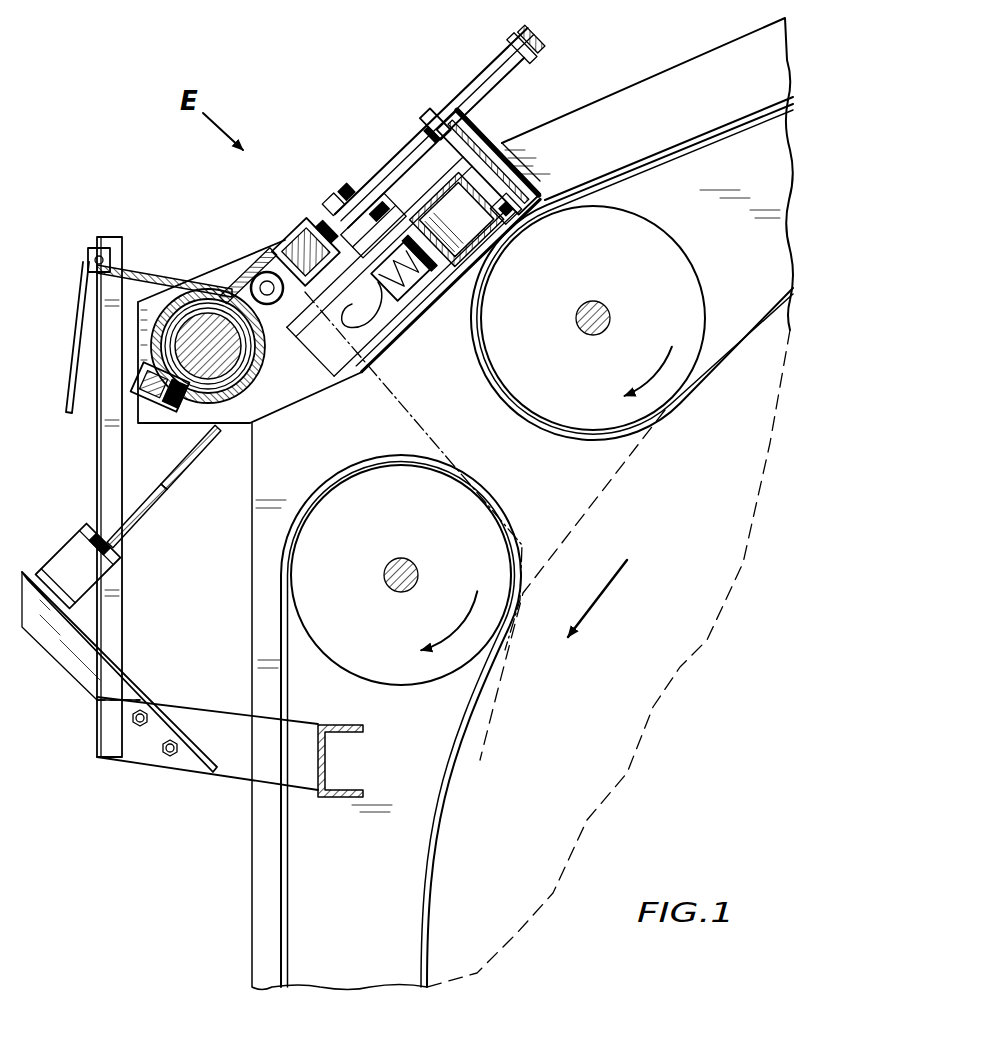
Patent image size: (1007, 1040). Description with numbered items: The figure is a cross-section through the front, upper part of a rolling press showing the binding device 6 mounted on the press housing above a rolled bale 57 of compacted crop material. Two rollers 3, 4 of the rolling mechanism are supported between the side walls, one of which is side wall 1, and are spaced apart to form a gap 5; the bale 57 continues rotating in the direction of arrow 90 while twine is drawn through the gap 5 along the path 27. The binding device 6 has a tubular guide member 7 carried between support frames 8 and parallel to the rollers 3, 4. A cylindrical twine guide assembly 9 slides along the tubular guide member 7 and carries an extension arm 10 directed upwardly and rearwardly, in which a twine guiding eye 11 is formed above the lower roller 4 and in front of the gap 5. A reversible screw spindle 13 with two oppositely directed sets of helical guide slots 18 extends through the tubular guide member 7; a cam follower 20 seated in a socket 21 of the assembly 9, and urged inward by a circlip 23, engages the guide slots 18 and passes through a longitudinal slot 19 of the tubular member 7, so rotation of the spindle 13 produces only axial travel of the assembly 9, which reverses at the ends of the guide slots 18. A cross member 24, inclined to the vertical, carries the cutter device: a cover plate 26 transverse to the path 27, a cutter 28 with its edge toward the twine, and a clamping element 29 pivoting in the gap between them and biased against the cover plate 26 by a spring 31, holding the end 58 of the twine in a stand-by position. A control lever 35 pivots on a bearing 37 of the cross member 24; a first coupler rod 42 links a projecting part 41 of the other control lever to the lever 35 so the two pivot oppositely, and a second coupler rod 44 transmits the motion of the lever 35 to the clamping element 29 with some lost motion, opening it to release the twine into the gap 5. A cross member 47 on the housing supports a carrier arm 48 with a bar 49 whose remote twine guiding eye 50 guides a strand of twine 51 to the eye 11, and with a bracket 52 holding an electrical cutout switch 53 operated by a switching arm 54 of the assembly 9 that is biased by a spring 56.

The side wall 1 is at (660, 87).
The roller 3 is at (665, 250).
The roller 4 is at (390, 677).
The gap 5 is at (547, 500).
The binding device 6 is at (218, 248).
The tubular guide member 7 is at (160, 300).
The support frames 8 is at (302, 390).
The twine guide assembly 9 is at (183, 292).
The extension arm 10 is at (249, 272).
The twine guiding eye 11 is at (266, 262).
The reversible screw spindle 13 is at (260, 420).
The guide slots 18 is at (270, 357).
The longitudinally extending slot 19 is at (180, 352).
The cam follower 20 is at (130, 400).
The socket 21 is at (135, 375).
The circlip 23 is at (137, 373).
The cross member 24 is at (487, 237).
The cover plate 26 is at (413, 193).
The path of twine 27 is at (433, 430).
The cutter 28 is at (377, 297).
The clamping element 29 is at (337, 203).
The spring 31 is at (427, 295).
The control lever 35 is at (413, 130).
The bearing 37 is at (500, 147).
The projecting part 41 is at (475, 70).
The first coupler rod 42 is at (493, 80).
The second coupler rod 44 is at (340, 187).
The cross member 47 is at (338, 797).
The carrier arm 48 is at (233, 763).
The bar 49 is at (105, 480).
The twine guiding eye 50 is at (88, 257).
The strand of twine 51 is at (75, 308).
The bracket 52 is at (75, 665).
The electrical cutout switch 53 is at (67, 548).
The switching arm 54 is at (160, 490).
The spring 56 is at (200, 443).
The bale 57 is at (622, 458).
The end of twine 58 is at (330, 328).
The arrow 90 is at (590, 590).